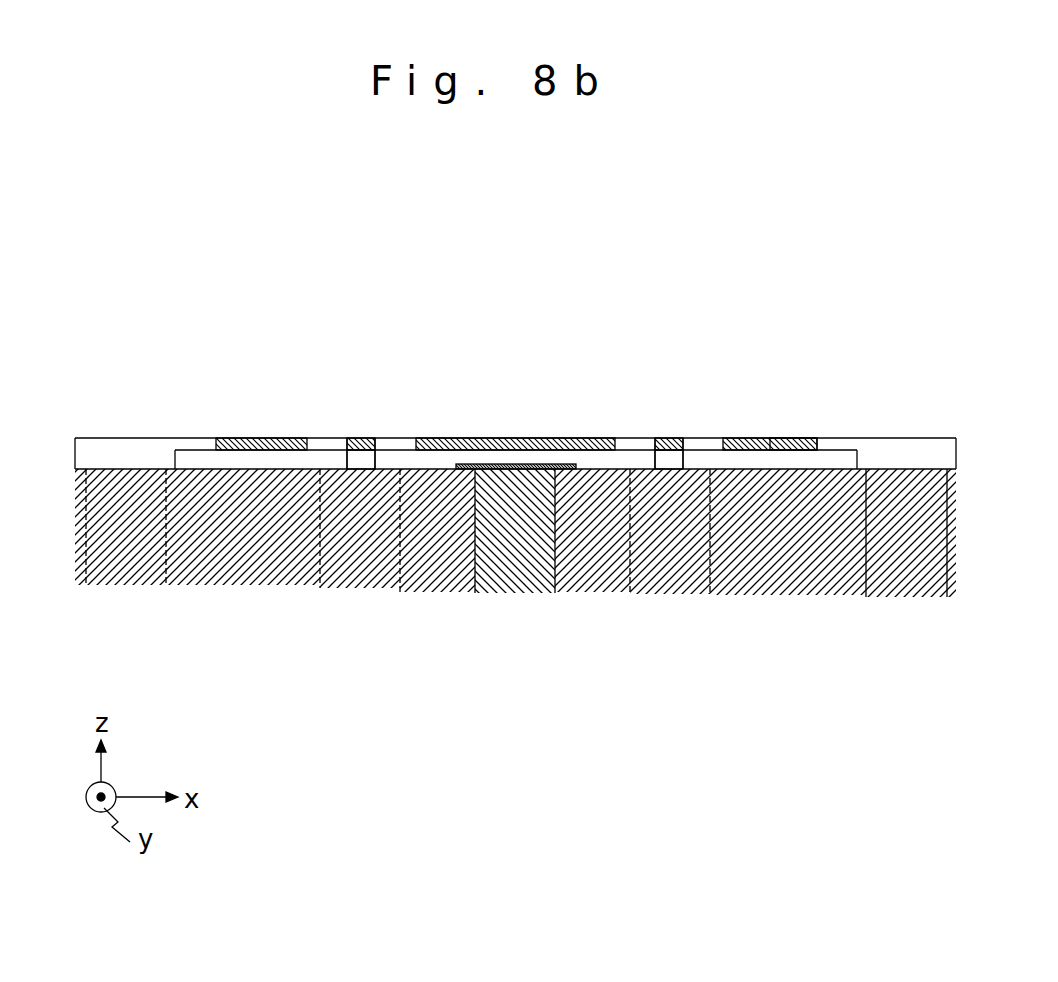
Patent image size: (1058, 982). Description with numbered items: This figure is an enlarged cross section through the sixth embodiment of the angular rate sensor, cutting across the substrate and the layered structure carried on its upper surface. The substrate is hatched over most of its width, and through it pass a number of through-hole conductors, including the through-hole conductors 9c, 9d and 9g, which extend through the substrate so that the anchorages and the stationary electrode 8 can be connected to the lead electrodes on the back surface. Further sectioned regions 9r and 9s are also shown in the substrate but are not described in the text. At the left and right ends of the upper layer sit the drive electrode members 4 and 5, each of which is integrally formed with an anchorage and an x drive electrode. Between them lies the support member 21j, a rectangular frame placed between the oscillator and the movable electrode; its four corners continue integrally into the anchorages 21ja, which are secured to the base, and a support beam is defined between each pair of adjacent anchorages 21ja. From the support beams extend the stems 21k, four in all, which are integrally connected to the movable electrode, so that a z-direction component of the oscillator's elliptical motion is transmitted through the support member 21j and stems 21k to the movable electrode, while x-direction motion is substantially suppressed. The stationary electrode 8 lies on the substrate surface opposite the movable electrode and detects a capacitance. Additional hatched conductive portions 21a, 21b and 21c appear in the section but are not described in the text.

The drive electrode member 4 is at (135, 438).
The drive electrode member 5 is at (890, 442).
The stationary electrode 8 is at (530, 463).
The through-hole conductor 9c is at (172, 533).
The substrate portion 9r is at (321, 545).
The through-hole conductor 9g is at (474, 552).
The substrate portion 9s is at (630, 533).
The through-hole conductor 9d is at (862, 548).
The electrode 21a is at (232, 440).
The electrode 21b is at (795, 442).
The electrode 21c is at (292, 440).
The support member 21j is at (370, 443).
The anchorage 21ja is at (360, 462).
The stem 21k is at (485, 440).